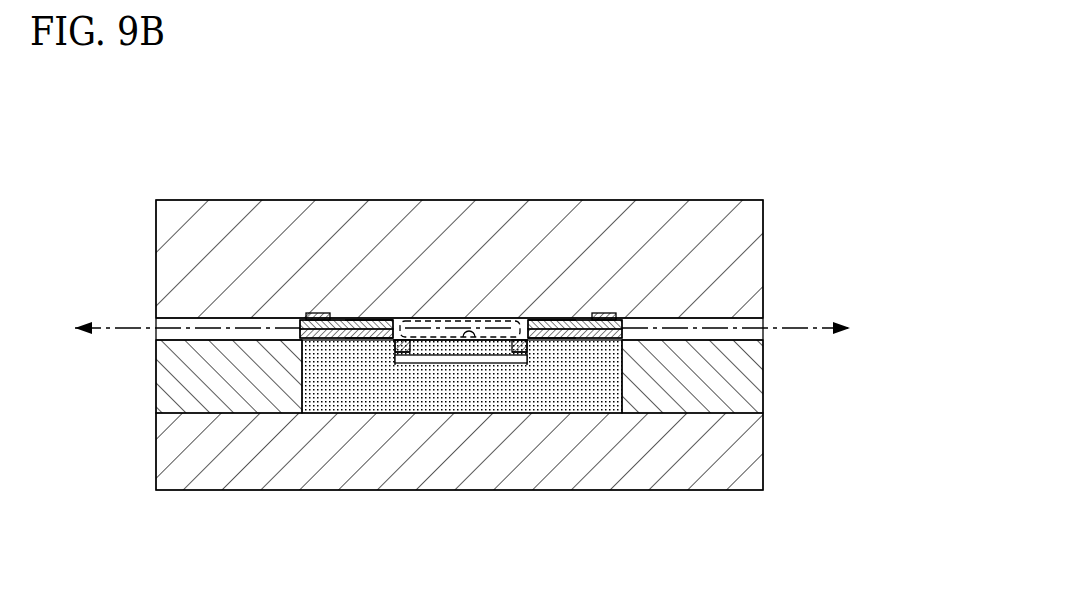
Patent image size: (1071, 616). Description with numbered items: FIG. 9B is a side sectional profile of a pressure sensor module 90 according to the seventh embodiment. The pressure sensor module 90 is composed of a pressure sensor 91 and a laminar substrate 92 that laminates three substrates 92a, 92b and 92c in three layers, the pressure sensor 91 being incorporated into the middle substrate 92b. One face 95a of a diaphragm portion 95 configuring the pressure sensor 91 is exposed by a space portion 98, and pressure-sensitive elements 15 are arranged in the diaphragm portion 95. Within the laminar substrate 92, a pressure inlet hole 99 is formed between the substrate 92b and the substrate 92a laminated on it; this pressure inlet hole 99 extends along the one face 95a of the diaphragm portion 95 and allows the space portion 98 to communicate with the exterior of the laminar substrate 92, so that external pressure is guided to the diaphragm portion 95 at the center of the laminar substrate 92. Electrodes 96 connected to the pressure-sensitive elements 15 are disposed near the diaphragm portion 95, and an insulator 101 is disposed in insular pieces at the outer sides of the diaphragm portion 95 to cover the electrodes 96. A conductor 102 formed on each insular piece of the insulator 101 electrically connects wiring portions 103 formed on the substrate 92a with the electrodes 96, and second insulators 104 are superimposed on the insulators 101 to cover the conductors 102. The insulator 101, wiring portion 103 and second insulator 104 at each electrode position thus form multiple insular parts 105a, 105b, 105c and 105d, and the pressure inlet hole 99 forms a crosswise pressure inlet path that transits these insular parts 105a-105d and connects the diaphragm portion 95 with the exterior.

The pressure sensor module 90 is at (163, 182).
The pressure sensor 91 is at (439, 326).
The laminar substrate 92 is at (537, 345).
The substrate 92a is at (748, 246).
The substrate 92b is at (746, 380).
The substrate 92c is at (511, 451).
The diaphragm portion 95 is at (432, 355).
The one face of the diaphragm portion 95a is at (477, 358).
The electrodes 96 is at (360, 345).
The space portion 98 is at (492, 318).
The pressure inlet hole 99 is at (466, 330).
The insulator 101 is at (300, 345).
The conductor 102 is at (345, 324).
The wiring portion 103 is at (318, 314).
The second insulator 104 is at (304, 322).
The insular part 105a is at (628, 330).
The insular part 105b is at (628, 330).
The insular part 105c is at (296, 329).
The insular part 105d is at (296, 329).
The pressure-sensitive elements 15 is at (398, 352).